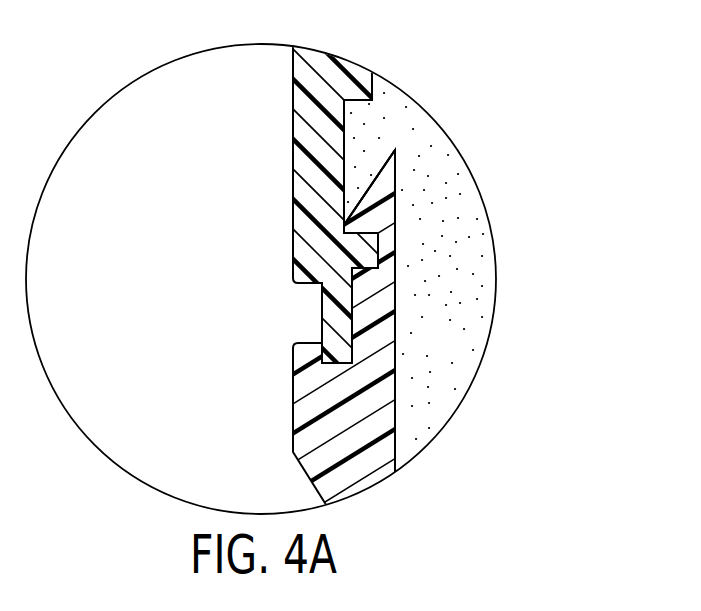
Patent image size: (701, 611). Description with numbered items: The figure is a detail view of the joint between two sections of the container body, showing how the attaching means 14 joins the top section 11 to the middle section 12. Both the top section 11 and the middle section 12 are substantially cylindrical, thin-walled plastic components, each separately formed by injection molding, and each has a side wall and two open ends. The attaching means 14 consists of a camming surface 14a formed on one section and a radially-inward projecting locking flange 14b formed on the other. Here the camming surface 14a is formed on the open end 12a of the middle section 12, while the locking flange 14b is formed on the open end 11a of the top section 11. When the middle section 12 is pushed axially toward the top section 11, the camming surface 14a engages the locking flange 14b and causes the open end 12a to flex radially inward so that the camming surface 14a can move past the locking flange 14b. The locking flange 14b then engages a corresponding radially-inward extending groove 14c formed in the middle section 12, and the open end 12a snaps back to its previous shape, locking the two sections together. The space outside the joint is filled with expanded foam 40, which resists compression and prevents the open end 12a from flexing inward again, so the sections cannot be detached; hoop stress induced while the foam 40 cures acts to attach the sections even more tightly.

The top section 11 is at (293, 143).
The open end of the top section 11a is at (322, 303).
The middle section 12 is at (293, 385).
The open end of the middle section 12a is at (395, 186).
The attaching means 14 is at (150, 274).
The camming surface 14a is at (386, 162).
The locking flange 14b is at (356, 257).
The groove 14c is at (358, 257).
The expanded foam 40 is at (452, 343).